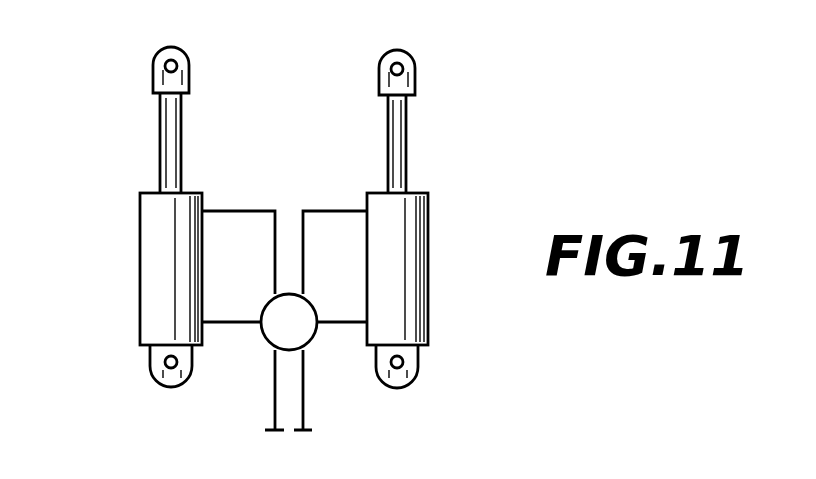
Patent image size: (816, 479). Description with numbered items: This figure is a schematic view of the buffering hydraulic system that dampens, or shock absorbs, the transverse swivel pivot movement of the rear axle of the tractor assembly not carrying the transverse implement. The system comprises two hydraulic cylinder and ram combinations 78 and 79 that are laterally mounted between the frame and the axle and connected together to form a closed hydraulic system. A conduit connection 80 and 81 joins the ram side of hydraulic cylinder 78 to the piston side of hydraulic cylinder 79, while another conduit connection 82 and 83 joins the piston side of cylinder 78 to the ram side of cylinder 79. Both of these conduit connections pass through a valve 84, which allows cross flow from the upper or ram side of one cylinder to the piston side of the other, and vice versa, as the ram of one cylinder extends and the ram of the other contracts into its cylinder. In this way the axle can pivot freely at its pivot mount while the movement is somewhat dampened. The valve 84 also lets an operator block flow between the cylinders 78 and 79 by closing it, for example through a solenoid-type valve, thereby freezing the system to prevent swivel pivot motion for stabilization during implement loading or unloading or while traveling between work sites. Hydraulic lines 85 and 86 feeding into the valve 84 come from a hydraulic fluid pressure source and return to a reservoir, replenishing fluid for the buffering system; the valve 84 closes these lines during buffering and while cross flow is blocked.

The hydraulic cylinder and ram combination 78 is at (404, 278).
The hydraulic cylinder and ram combination 79 is at (152, 278).
The conduit connection 80 is at (338, 210).
The conduit connection 81 is at (228, 324).
The conduit connection 82 is at (340, 324).
The conduit connection 83 is at (234, 210).
The valve 84 is at (270, 305).
The hydraulic line 85 is at (273, 416).
The hydraulic line 86 is at (306, 418).